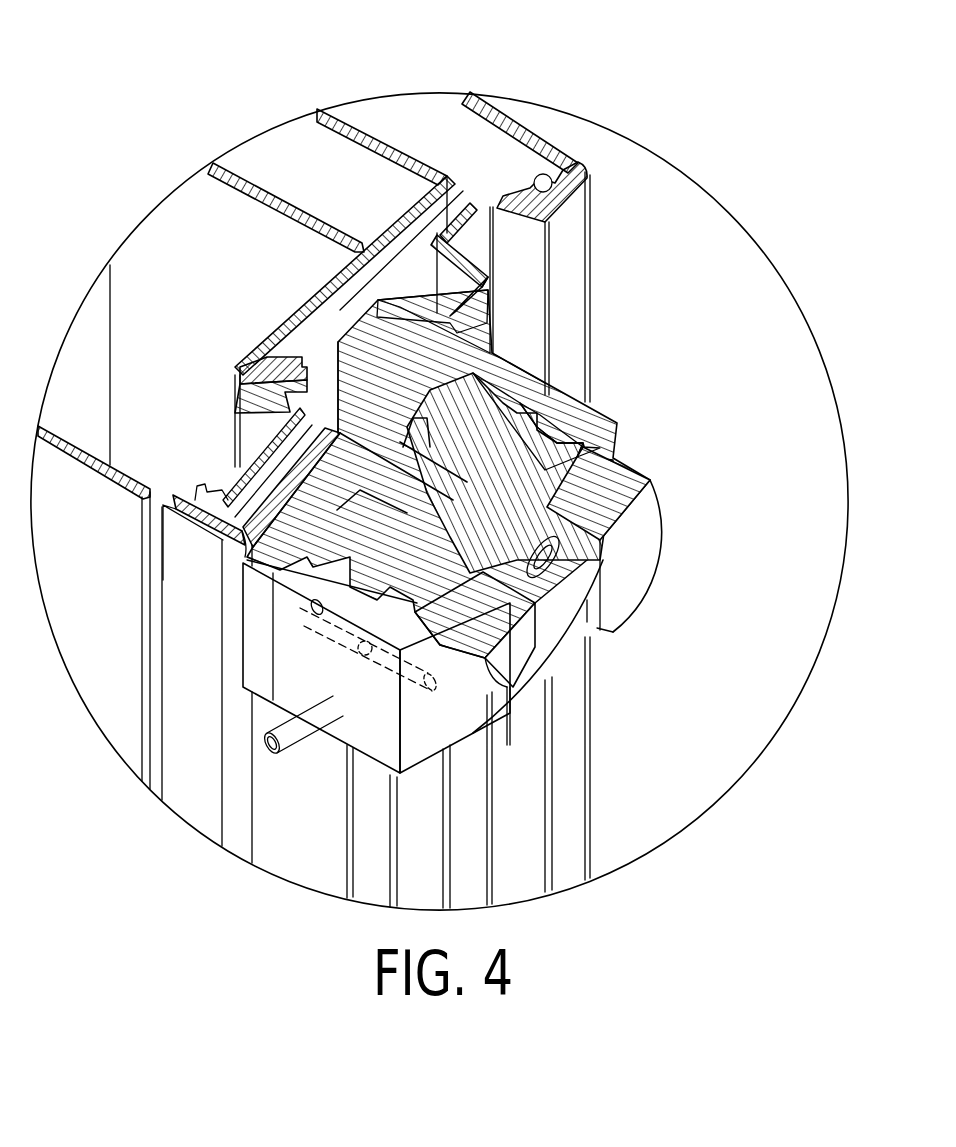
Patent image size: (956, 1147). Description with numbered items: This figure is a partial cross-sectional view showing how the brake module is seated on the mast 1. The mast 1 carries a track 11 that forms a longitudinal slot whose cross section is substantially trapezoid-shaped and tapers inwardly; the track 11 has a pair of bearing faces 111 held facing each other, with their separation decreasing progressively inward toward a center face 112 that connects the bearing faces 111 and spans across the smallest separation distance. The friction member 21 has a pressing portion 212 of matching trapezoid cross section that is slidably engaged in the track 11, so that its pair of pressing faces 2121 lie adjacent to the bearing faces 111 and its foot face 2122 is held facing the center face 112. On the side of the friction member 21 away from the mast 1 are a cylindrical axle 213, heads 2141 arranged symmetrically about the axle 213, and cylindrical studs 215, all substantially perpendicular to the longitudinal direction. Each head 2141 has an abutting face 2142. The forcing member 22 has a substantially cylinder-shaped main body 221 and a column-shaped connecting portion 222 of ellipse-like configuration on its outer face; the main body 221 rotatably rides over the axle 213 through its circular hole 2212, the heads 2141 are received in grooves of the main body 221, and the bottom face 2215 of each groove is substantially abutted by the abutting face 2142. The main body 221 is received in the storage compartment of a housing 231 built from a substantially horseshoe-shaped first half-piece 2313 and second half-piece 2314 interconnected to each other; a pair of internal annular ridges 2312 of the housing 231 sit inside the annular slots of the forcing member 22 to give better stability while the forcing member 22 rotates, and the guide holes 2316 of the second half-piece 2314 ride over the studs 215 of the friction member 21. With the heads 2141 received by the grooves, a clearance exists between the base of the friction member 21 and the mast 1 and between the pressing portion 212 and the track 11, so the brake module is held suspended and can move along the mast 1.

The mast 1 is at (534, 134).
The track 11 is at (377, 53).
The bearing face 111 is at (388, 298).
The center face 112 is at (350, 267).
The friction member 21 is at (700, 381).
The pressing portion 212 is at (679, 217).
The pressing face 2121 is at (462, 358).
The foot face 2122 is at (456, 372).
The axle 213 is at (525, 402).
The head 2141 is at (500, 386).
The abutting face 2142 is at (248, 560).
The stud 215 is at (336, 628).
The forcing member 22 is at (747, 560).
The main body 221 is at (747, 470).
The circular hole 2212 is at (543, 507).
The bottom face 2215 is at (355, 552).
The connecting portion 222 is at (578, 585).
The housing 231 is at (706, 633).
The internal annular ridge 2312 is at (550, 437).
The first half-piece 2313 is at (555, 652).
The second half-piece 2314 is at (474, 708).
The guide hole 2316 is at (432, 685).